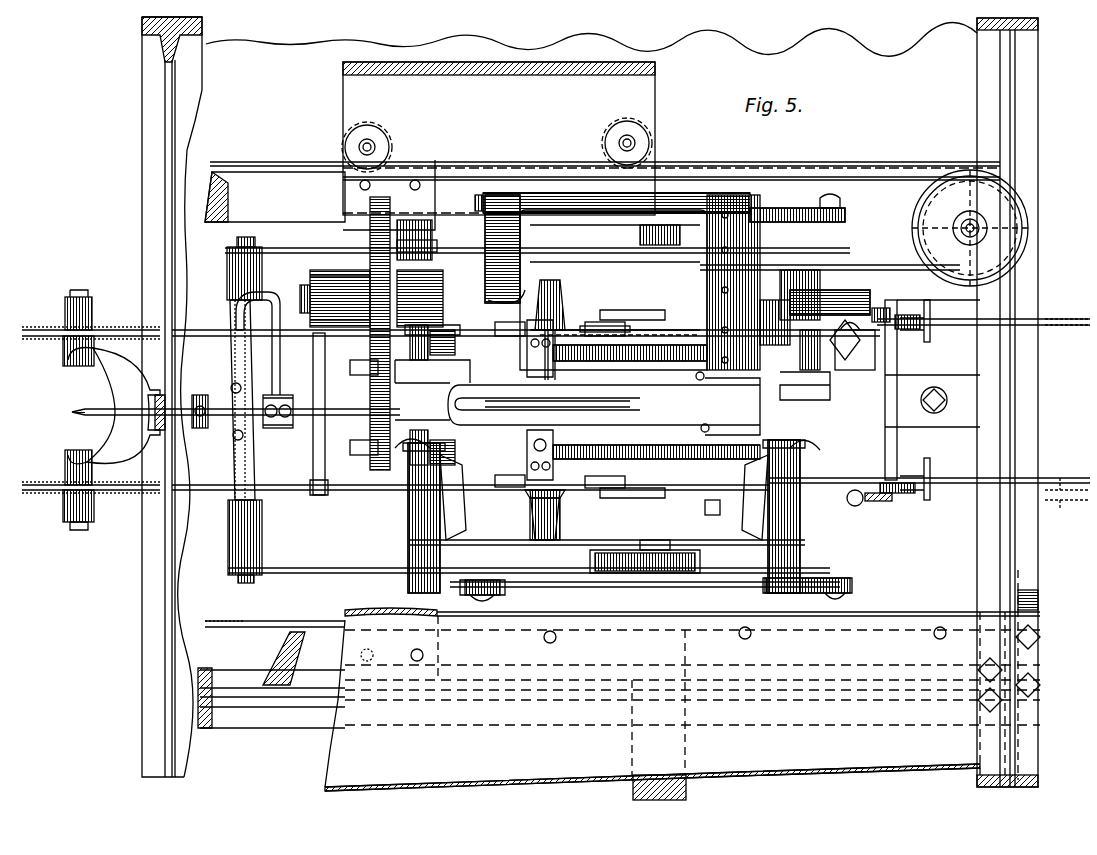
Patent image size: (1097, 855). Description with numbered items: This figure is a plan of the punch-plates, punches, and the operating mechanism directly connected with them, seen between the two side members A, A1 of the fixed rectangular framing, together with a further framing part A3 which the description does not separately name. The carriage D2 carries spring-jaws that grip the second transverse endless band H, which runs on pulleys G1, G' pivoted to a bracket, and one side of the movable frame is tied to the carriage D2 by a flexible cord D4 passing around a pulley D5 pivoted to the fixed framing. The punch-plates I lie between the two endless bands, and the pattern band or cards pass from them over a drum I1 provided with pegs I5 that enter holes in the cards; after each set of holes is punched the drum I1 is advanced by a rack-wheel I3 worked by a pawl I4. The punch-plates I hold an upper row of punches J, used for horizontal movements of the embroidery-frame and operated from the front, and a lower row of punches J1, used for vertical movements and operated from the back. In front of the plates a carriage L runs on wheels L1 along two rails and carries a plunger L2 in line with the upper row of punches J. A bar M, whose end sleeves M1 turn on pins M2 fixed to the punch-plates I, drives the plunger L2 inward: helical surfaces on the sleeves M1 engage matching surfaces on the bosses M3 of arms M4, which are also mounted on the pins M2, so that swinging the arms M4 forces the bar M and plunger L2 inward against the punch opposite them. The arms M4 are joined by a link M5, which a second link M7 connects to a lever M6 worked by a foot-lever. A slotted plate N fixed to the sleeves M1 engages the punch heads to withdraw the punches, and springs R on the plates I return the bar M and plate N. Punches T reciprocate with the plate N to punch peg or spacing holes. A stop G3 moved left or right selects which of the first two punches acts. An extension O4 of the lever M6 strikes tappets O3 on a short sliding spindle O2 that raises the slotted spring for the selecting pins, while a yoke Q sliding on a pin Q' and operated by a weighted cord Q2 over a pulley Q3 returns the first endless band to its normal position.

The side member A is at (152, 248).
The side member A1 is at (1032, 131).
The frame cross bar A3 is at (1036, 576).
The carriage D2 is at (671, 146).
The flexible cord D4 is at (862, 180).
The pulley D5 is at (1028, 206).
The pulleys G1 is at (58, 330).
The stop G3 is at (316, 444).
The pulleys G' is at (685, 424).
The endless band H is at (208, 333).
The sliding spindle O2 is at (103, 396).
The tappets O3 is at (286, 395).
The extension of the lever O4 is at (272, 350).
The bar M is at (712, 520).
The sleeves M1 is at (410, 545).
The pins M2 is at (402, 470).
The bosses M3 is at (410, 580).
The arms M4 is at (848, 215).
The link M5 is at (565, 195).
The lever M6 is at (250, 462).
The second link M7 is at (318, 255).
The punch-plates I is at (612, 383).
The drum I1 is at (640, 282).
The rack-wheel I3 is at (372, 350).
The pawl I4 is at (368, 425).
The pegs I5 is at (623, 330).
The punches T is at (480, 372).
The carriage L is at (568, 396).
The wheels L1 is at (562, 419).
The plunger L2 is at (560, 288).
The plate N is at (572, 322).
The upper row of punches J is at (634, 501).
The lower row of punches J1 is at (612, 330).
The springs R is at (455, 528).
The yoke Q is at (926, 399).
The pin Q' is at (1067, 426).
The weighted cord Q2 is at (915, 512).
The pulley Q3 is at (882, 308).